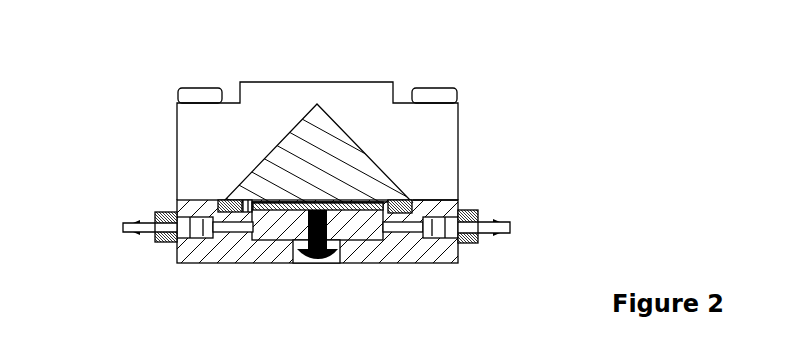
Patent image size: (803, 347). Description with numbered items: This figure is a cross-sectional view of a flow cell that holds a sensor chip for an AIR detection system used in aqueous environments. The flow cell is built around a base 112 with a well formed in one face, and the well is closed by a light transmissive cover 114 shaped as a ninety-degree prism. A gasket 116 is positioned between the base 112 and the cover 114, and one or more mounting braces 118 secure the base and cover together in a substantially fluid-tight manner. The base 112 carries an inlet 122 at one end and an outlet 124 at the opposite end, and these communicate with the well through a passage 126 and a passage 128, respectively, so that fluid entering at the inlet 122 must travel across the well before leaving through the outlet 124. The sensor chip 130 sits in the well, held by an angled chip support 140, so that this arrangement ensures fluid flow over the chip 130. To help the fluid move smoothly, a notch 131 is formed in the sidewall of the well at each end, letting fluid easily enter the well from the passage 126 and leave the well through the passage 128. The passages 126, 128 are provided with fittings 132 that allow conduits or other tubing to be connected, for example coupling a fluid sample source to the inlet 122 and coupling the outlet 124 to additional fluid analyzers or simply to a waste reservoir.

The base 112 is at (458, 254).
The light transmissive cover 114 is at (336, 123).
The gasket 116 is at (413, 200).
The mounting braces 118 is at (459, 122).
The inlet 122 is at (526, 227).
The outlet 124 is at (106, 227).
The passage 126 is at (404, 228).
The passage 128 is at (227, 232).
The chip 130 is at (353, 202).
The notch 131 is at (247, 200).
The fittings 132 is at (148, 246).
The angled chip support 140 is at (258, 240).